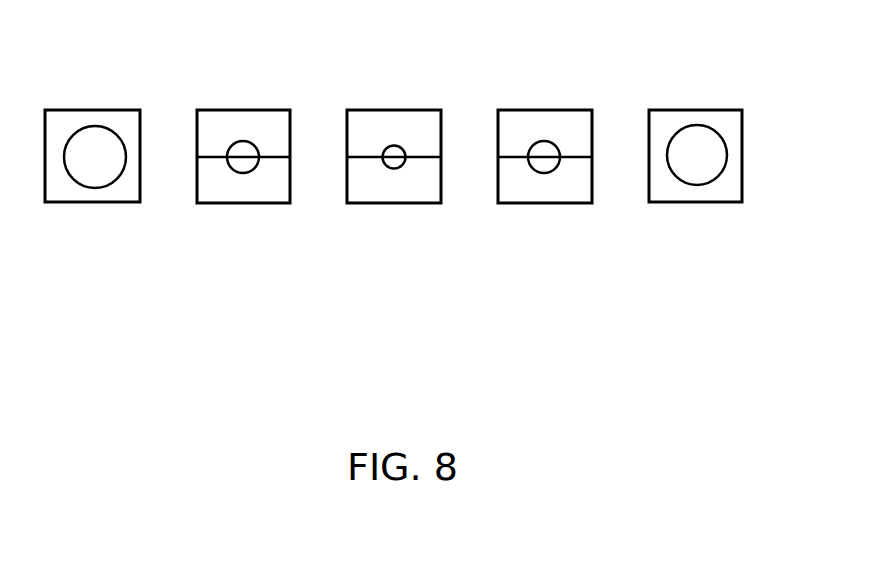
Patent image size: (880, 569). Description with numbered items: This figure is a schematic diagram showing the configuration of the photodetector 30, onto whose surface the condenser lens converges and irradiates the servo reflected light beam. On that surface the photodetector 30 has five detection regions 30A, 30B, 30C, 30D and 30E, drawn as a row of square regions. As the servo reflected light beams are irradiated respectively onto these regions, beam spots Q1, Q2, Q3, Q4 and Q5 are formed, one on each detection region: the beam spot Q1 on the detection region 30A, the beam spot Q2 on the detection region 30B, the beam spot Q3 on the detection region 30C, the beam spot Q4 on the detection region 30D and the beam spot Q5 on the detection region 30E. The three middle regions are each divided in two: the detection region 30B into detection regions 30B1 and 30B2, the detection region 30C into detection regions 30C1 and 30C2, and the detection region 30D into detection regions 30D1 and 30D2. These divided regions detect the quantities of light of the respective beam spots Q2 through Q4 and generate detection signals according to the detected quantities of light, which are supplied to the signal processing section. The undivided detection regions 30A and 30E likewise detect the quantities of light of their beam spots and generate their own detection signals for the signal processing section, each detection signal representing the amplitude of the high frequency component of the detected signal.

The photodetector 30 is at (58, 37).
The detection region 30A is at (118, 203).
The detection region 30B is at (281, 178).
The detection region 30B1 is at (268, 110).
The detection region 30B2 is at (267, 203).
The detection region 30C is at (432, 178).
The detection region 30C1 is at (418, 110).
The detection region 30C2 is at (418, 203).
The detection region 30D is at (584, 178).
The detection region 30D1 is at (570, 110).
The detection region 30D2 is at (568, 203).
The detection region 30E is at (720, 203).
The beam spot Q1 is at (95, 126).
The beam spot Q2 is at (243, 141).
The beam spot Q3 is at (394, 145).
The beam spot Q4 is at (544, 141).
The beam spot Q5 is at (697, 125).